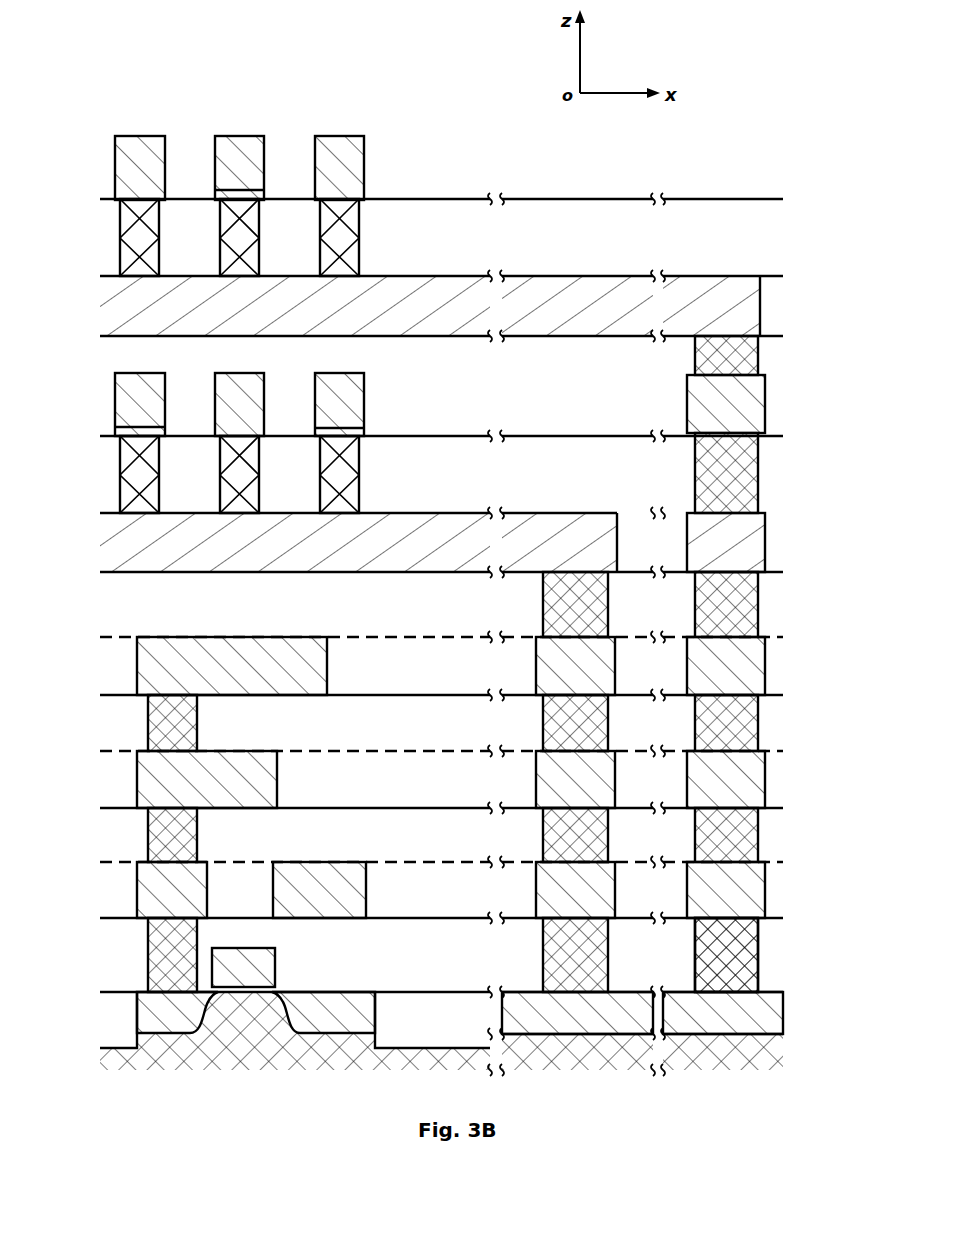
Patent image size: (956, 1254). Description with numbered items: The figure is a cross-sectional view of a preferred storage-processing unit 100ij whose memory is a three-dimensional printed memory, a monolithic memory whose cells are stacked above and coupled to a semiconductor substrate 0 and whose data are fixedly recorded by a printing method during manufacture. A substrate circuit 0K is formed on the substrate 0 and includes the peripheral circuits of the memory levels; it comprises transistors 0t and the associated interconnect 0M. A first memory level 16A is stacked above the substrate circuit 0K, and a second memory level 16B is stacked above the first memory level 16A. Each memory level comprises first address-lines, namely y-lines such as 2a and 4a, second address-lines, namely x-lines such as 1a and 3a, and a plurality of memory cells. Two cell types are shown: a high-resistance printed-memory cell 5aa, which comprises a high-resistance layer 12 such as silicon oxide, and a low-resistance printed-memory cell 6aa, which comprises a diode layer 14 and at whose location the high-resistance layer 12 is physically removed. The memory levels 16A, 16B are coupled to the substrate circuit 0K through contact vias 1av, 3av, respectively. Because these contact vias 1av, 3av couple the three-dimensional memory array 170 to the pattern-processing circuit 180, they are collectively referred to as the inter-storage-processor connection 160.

The storage-processing unit (SPU) 100ij is at (174, 72).
The 3D-M array 170 is at (79, 573).
The pattern-processing circuit 180 is at (79, 1070).
The second memory level 16B is at (797, 337).
The first memory level 16A is at (797, 375).
The low-resistance 3D-P cell 6aa is at (409, 336).
The high-resistance 3D-P cell 5aa is at (409, 373).
The first address-line (y-line) 4a is at (239, 168).
The second address-line (x-line) 3a is at (430, 306).
The first address-line (y-line) 2a is at (239, 404).
The second address-line (x-line) 1a is at (358, 542).
The diode layer 14 is at (348, 243).
The high-resistance layer 12 is at (362, 433).
The substrate circuit 0K is at (797, 1070).
The interconnect 0M is at (147, 677).
The inter-storage-processor (ISP) connection 160 is at (637, 725).
The contact via 1av is at (537, 985).
The contact via 3av is at (687, 985).
The transistor 0t is at (306, 972).
The substrate 0 is at (441, 1031).